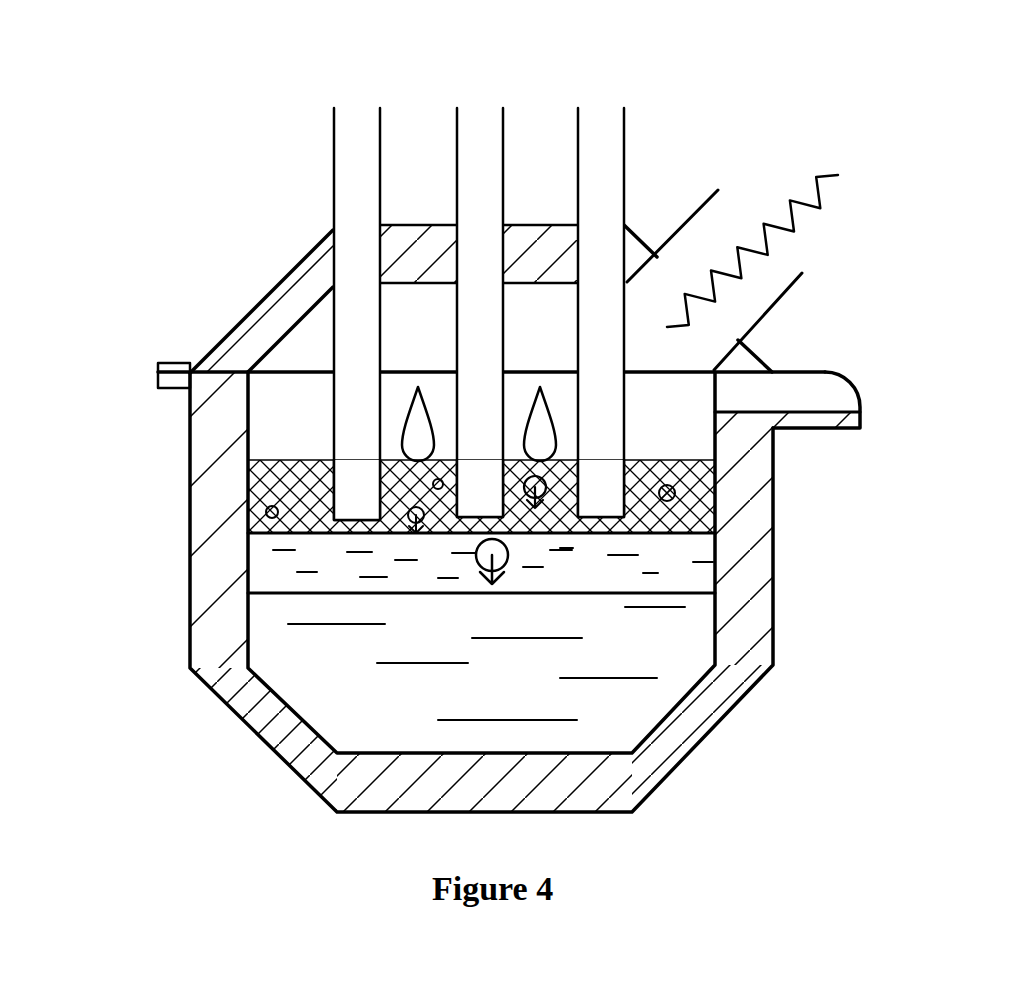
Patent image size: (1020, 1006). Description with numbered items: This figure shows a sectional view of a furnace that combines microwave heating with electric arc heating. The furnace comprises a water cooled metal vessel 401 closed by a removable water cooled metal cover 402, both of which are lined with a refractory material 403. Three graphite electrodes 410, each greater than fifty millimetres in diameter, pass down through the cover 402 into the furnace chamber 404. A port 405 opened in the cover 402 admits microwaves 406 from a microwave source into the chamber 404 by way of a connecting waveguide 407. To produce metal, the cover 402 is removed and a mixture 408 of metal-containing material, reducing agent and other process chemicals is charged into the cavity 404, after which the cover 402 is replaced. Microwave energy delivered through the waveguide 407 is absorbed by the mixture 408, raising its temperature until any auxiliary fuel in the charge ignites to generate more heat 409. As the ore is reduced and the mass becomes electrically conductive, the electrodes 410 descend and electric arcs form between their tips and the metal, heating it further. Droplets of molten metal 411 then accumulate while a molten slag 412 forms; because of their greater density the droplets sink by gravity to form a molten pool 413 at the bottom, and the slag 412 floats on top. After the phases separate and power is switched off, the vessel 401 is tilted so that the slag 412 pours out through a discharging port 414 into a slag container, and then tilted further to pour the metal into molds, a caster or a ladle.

The water cooled metal vessel 401 is at (187, 617).
The removable water cooled metal cover 402 is at (305, 347).
The refractory material 403 is at (202, 445).
The furnace chamber 404 is at (258, 282).
The port 405 is at (657, 290).
The microwaves 406 is at (820, 162).
The connecting waveguide 407 is at (773, 300).
The mixture 408 is at (272, 497).
The heat 409 is at (556, 438).
The graphite electrodes 410 is at (480, 197).
The droplets of molten metal 411 is at (510, 557).
The molten slag 412 is at (640, 575).
The molten pool 413 is at (653, 652).
The discharging port 414 is at (815, 400).